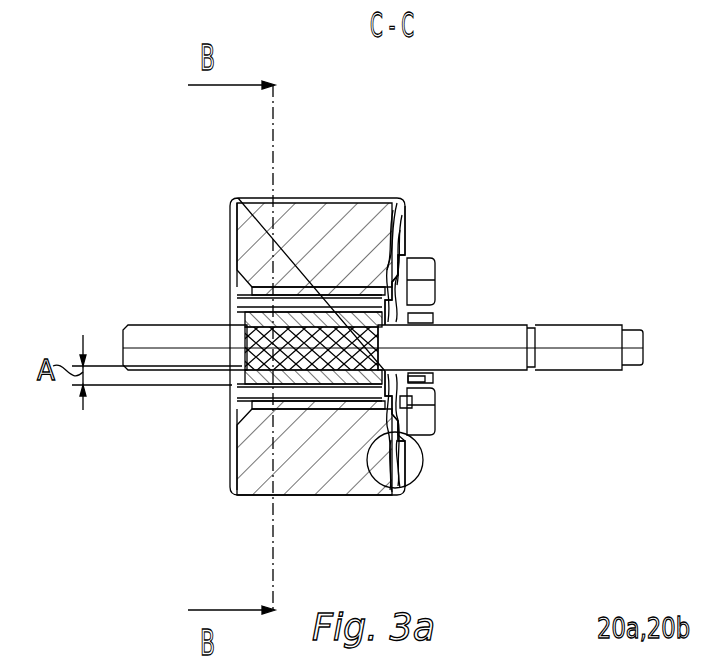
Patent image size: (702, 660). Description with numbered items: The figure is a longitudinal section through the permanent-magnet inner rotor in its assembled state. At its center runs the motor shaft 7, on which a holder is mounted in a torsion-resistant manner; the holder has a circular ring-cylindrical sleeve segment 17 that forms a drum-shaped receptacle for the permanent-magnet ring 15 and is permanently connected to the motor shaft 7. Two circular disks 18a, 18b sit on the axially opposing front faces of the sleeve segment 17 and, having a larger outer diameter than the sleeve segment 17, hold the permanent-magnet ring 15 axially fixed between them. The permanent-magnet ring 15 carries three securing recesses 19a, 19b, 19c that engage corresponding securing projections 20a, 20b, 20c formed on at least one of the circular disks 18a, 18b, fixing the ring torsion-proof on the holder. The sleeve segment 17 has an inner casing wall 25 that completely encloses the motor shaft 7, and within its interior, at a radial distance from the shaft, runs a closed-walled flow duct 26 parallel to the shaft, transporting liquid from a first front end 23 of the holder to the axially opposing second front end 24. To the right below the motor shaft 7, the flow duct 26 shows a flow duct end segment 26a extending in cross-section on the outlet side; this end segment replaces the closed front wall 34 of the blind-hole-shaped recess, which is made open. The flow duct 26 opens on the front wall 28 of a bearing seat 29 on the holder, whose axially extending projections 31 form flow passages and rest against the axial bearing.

The motor shaft 7 is at (150, 337).
The permanent-magnet ring 15 is at (297, 200).
The sleeve segment 17 is at (293, 412).
The circular disk 18a is at (415, 245).
The circular disk 18b is at (227, 250).
The securing recess 19a is at (372, 230).
The securing recess 19b is at (372, 230).
The securing recess 19c is at (375, 470).
The securing projection 20a is at (402, 228).
The securing projection 20b is at (402, 228).
The securing projection 20c is at (417, 483).
The first front end 23 is at (230, 395).
The second front end 24 is at (412, 402).
The inner casing wall 25 is at (408, 302).
The flow duct 26 is at (320, 392).
The flow duct end segment 26a is at (407, 382).
The front wall 28 is at (390, 321).
The bearing seat 29 is at (405, 290).
The projection 31 is at (405, 290).
The closed front wall 34 is at (397, 282).